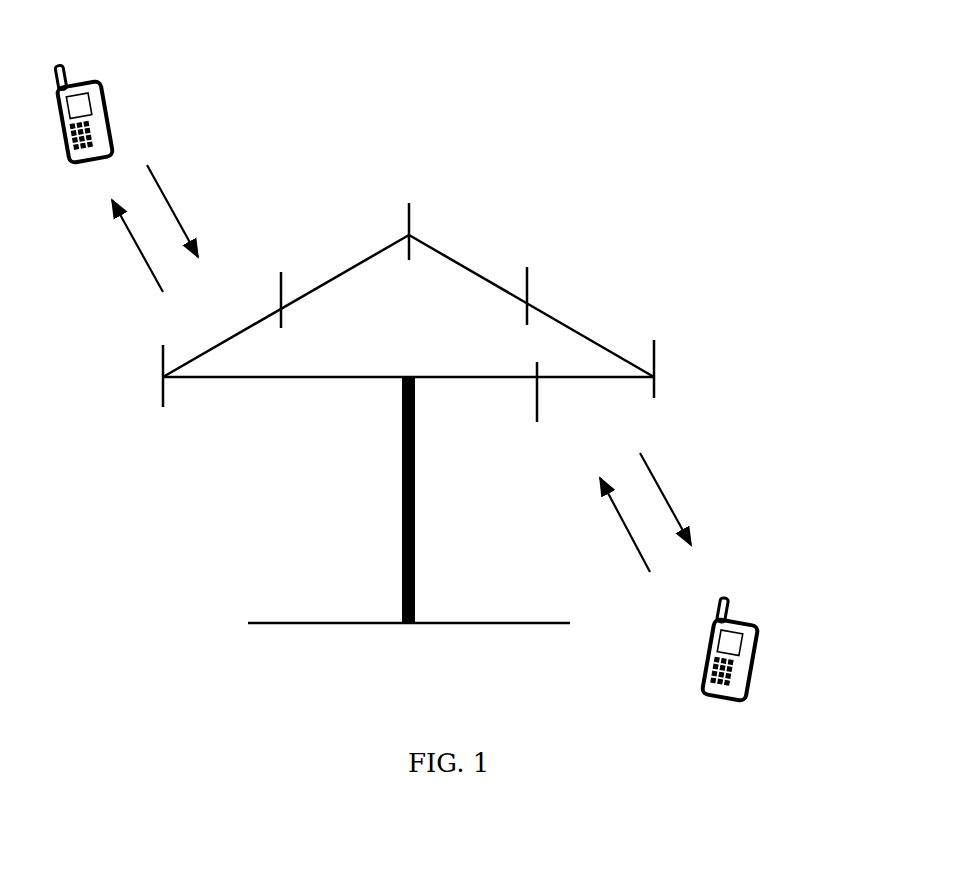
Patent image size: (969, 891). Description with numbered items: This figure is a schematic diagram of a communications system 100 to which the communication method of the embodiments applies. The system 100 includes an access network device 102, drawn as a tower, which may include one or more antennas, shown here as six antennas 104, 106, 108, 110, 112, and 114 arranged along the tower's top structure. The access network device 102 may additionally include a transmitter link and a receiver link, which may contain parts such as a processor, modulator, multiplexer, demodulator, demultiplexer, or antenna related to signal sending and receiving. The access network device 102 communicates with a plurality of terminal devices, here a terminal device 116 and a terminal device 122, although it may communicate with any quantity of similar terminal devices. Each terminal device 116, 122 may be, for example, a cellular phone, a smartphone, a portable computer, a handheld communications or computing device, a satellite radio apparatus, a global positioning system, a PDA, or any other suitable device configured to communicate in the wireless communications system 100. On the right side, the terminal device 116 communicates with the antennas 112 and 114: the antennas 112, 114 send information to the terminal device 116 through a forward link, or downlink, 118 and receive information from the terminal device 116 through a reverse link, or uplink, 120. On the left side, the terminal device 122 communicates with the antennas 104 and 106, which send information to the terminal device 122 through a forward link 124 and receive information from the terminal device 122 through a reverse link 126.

The system 100 is at (602, 78).
The access network device 102 is at (415, 552).
The antenna 104 is at (163, 385).
The antenna 106 is at (281, 318).
The antenna 108 is at (409, 217).
The antenna 110 is at (528, 280).
The antenna 112 is at (655, 355).
The antenna 114 is at (537, 408).
The terminal device 116 is at (758, 642).
The forward link 118 is at (655, 482).
The reverse link 120 is at (638, 548).
The terminal device 122 is at (105, 93).
The forward link 124 is at (140, 253).
The reverse link 126 is at (160, 190).